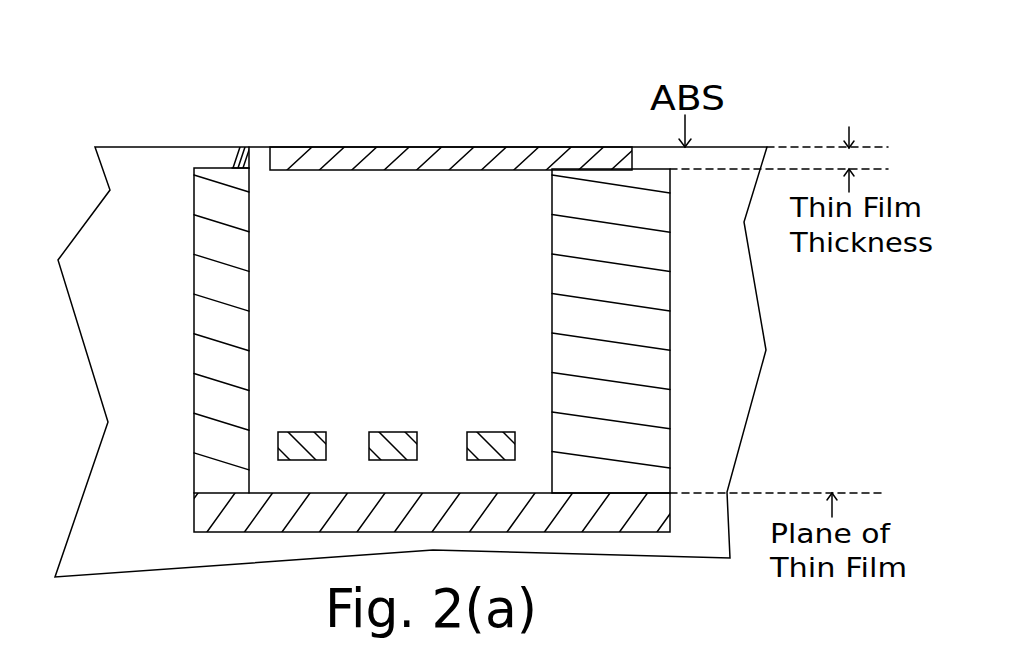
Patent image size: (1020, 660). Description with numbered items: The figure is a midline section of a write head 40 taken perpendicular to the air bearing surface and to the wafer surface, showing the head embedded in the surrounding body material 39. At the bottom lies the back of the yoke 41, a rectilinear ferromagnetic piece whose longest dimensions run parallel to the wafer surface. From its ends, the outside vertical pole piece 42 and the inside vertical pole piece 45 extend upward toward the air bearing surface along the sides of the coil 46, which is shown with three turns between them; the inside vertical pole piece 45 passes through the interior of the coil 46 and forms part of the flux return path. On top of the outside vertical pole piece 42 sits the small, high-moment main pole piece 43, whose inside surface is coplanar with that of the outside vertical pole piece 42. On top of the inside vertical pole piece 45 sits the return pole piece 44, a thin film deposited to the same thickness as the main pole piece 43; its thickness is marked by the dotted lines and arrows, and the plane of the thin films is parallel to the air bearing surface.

The body material 39 is at (722, 402).
The write head 40 is at (570, 107).
The back of the yoke 41 is at (215, 511).
The outside vertical pole piece 42 is at (213, 320).
The main pole piece 43 is at (238, 148).
The return pole piece 44 is at (413, 155).
The inside vertical pole piece 45 is at (627, 287).
The coil 46 is at (477, 440).